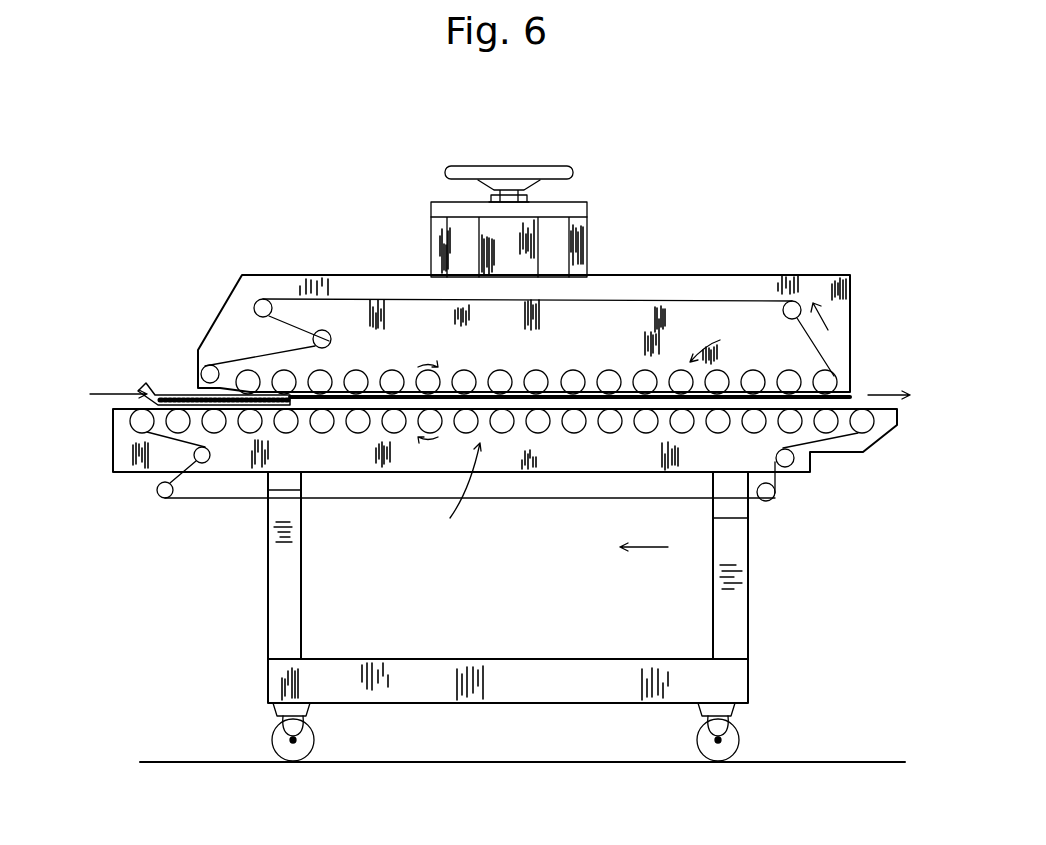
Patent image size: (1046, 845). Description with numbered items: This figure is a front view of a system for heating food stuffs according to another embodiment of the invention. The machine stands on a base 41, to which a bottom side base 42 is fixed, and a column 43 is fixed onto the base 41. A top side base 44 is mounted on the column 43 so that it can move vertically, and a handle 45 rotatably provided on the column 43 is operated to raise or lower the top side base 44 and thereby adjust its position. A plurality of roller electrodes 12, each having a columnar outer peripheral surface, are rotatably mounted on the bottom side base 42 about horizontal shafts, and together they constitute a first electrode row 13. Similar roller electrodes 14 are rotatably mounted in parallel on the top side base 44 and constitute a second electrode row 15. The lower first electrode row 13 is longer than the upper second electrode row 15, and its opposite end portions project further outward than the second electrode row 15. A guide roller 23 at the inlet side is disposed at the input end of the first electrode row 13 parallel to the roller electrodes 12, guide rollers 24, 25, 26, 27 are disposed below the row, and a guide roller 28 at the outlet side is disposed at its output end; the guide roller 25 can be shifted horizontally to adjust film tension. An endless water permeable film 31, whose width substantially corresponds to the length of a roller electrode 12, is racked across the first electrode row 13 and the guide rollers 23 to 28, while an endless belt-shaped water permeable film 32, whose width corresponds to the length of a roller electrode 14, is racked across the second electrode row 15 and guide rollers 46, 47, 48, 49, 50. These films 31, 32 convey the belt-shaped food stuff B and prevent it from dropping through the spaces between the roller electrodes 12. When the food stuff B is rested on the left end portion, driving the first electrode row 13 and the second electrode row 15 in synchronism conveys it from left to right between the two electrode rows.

The roller electrode 12 is at (647, 428).
The first electrode row 13 is at (453, 496).
The roller electrode 14 is at (647, 373).
The second electrode row 15 is at (720, 342).
The guide roller 23 is at (140, 420).
The guide roller 24 is at (207, 458).
The guide roller 25 is at (165, 497).
The guide roller 26 is at (768, 500).
The guide roller 27 is at (795, 465).
The guide roller 28 is at (865, 424).
The water permeable film 31 is at (500, 502).
The belt-shaped water permeable film 32 is at (650, 298).
The base 41 is at (750, 598).
The bottom side base 42 is at (123, 474).
The column 43 is at (590, 238).
The top side base 44 is at (850, 290).
The handle 45 is at (565, 168).
The guide roller 46 is at (205, 365).
The guide roller 47 is at (325, 330).
The guide roller 48 is at (262, 298).
The guide roller 49 is at (792, 300).
The guide roller 50 is at (835, 378).
The food stuff B is at (175, 393).